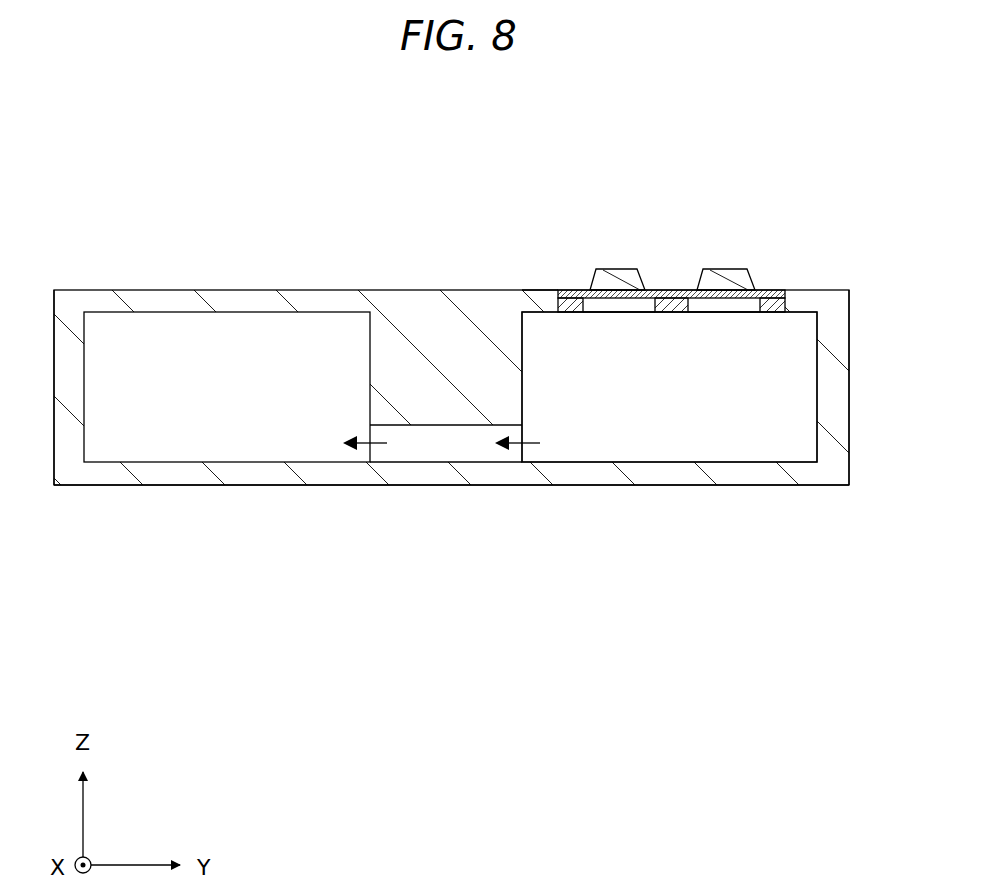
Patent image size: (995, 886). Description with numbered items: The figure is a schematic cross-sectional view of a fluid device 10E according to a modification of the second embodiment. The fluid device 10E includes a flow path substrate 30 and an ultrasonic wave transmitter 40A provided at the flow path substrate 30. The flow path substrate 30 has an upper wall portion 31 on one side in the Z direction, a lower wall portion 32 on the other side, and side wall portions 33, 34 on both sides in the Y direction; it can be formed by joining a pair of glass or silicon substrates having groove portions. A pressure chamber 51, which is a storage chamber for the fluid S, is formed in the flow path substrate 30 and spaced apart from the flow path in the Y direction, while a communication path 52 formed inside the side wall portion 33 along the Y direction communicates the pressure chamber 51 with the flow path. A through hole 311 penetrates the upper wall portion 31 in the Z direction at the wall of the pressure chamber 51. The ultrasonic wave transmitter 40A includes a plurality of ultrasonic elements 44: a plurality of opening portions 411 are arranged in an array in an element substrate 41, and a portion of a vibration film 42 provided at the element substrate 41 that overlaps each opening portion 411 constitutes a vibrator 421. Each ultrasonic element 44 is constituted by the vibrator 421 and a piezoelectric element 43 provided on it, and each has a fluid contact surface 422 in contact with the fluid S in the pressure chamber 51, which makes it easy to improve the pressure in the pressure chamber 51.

The fluid device 10E is at (77, 160).
The flow path substrate 30 is at (228, 288).
The upper wall portion 31 is at (177, 300).
The lower wall portion 32 is at (178, 477).
The side wall portion 33 is at (72, 430).
The side wall portion 34 is at (843, 320).
The through hole 311 is at (557, 289).
The fluid S is at (305, 330).
The pressure chamber 51 is at (816, 402).
The communication path 52 is at (440, 463).
The ultrasonic wave transmitter 40A is at (575, 166).
The element substrate 41 is at (775, 289).
The opening portion 411 is at (645, 313).
The vibration film 42 is at (578, 289).
The vibrator 421 is at (630, 289).
The fluid contact surface 422 is at (596, 313).
The piezoelectric element 43 is at (612, 273).
The ultrasonic element 44 is at (667, 208).